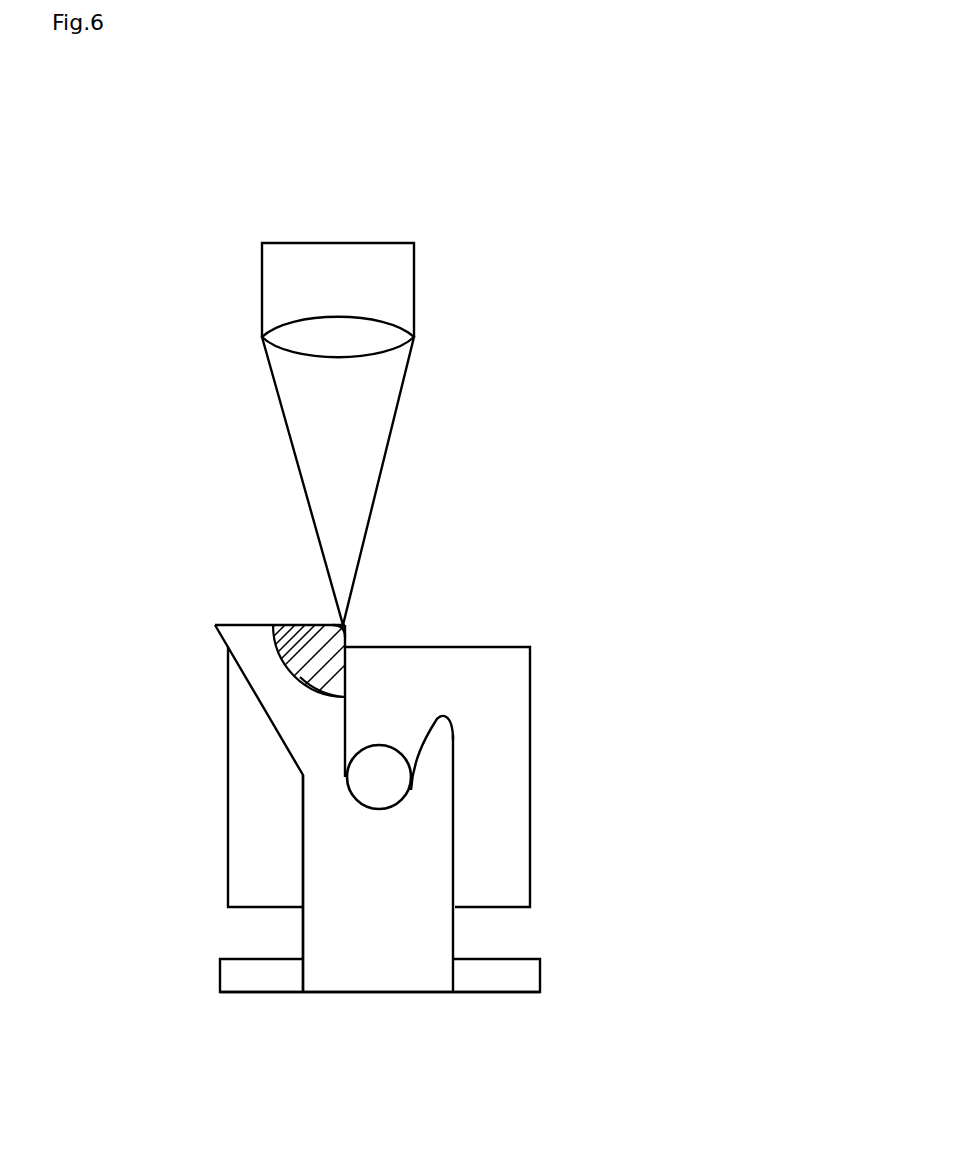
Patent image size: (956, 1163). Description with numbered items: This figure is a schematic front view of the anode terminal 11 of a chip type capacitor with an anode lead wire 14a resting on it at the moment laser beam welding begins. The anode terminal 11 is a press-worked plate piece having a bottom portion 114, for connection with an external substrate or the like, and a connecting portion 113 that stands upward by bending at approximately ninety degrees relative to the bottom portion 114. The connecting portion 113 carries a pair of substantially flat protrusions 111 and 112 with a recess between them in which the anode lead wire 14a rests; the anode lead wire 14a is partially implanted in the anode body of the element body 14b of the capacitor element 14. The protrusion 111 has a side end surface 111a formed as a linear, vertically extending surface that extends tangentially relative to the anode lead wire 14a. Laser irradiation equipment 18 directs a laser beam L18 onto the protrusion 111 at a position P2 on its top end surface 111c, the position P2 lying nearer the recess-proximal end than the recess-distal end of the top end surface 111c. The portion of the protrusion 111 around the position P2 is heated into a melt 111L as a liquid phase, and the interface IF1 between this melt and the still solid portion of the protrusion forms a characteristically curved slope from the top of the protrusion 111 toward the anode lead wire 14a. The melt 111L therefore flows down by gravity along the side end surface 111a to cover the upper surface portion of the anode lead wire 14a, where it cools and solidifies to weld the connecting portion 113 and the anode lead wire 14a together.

The laser irradiation equipment 18 is at (340, 243).
The laser beam L18 is at (397, 408).
The position P2 is at (345, 625).
The protrusion 111 is at (228, 663).
The top end surface 111c is at (227, 625).
The melt 111L is at (298, 625).
The interface IF1 is at (297, 682).
The side end surface 111a is at (347, 707).
The capacitor element 14 is at (530, 647).
The element body 14b is at (530, 703).
The anode lead wire 14a is at (380, 775).
The protrusion 112 is at (455, 753).
The connecting portion 113 is at (455, 928).
The bottom portion 114 is at (507, 980).
The anode terminal 11 is at (183, 1010).